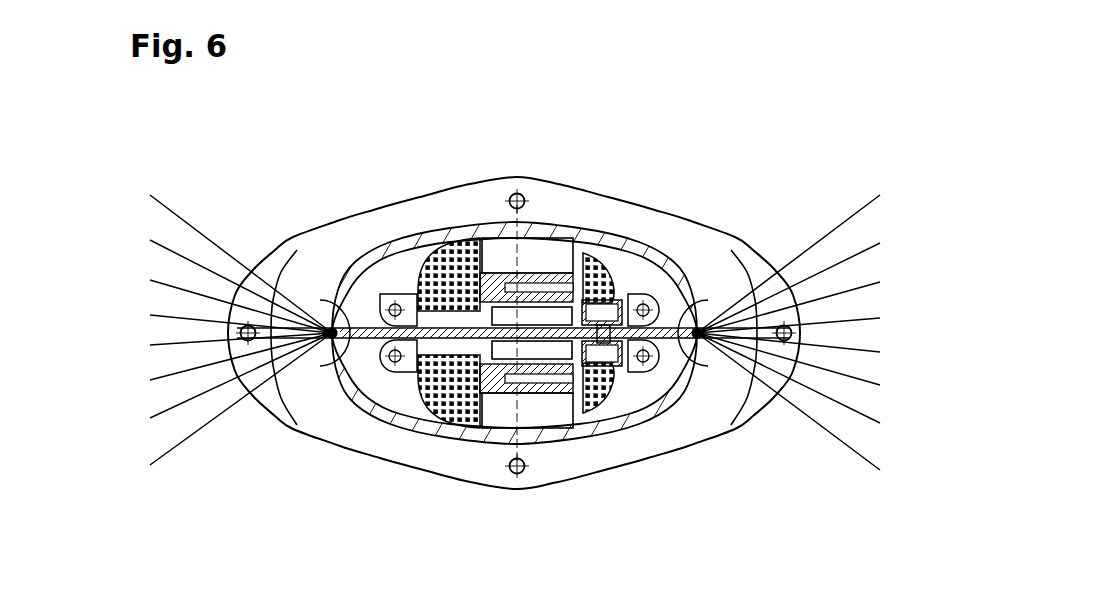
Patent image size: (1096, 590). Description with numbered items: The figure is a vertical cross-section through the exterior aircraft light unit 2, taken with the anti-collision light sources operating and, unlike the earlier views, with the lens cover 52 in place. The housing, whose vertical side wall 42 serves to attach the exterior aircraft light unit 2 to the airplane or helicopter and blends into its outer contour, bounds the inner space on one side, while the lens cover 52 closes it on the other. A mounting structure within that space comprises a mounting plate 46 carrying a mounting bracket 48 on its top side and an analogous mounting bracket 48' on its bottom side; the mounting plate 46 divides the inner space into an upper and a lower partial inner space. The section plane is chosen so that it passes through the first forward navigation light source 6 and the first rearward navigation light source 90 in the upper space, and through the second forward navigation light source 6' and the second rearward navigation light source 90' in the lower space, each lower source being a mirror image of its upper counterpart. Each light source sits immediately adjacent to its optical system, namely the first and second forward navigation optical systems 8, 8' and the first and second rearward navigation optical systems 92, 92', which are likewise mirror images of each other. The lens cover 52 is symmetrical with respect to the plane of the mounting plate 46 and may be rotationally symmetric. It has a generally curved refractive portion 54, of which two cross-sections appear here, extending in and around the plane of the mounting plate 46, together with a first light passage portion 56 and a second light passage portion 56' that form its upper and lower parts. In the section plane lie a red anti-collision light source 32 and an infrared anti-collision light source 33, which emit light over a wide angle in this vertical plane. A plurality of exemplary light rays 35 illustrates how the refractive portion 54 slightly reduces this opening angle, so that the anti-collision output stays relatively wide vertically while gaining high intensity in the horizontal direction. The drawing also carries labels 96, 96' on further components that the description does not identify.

The exterior aircraft light unit 2 is at (300, 147).
The first forward navigation light source 6 is at (525, 263).
The second forward navigation light source 6' is at (521, 468).
The first forward navigation optical system 8 is at (392, 242).
The second forward navigation optical system 8' is at (449, 456).
The red anti-collision light source 32 is at (322, 400).
The infrared anti-collision light source 33 is at (720, 400).
The exemplary light rays 35 is at (186, 259).
The vertical side wall 42 is at (446, 220).
The mounting plate 46 is at (695, 415).
The mounting bracket 48 is at (551, 208).
The mounting bracket 48' is at (540, 457).
The lens cover 52 is at (494, 433).
The refractive portion 54 is at (770, 287).
The first light passage portion 56 is at (535, 258).
The second light passage portion 56' is at (562, 479).
The first rearward navigation light source 90 is at (635, 216).
The second rearward navigation light source 90' is at (613, 451).
The first rearward navigation optical system 92 is at (658, 234).
The second rearward navigation optical system 92' is at (641, 453).
The bearing block 96 is at (698, 259).
The support block 96' is at (407, 388).